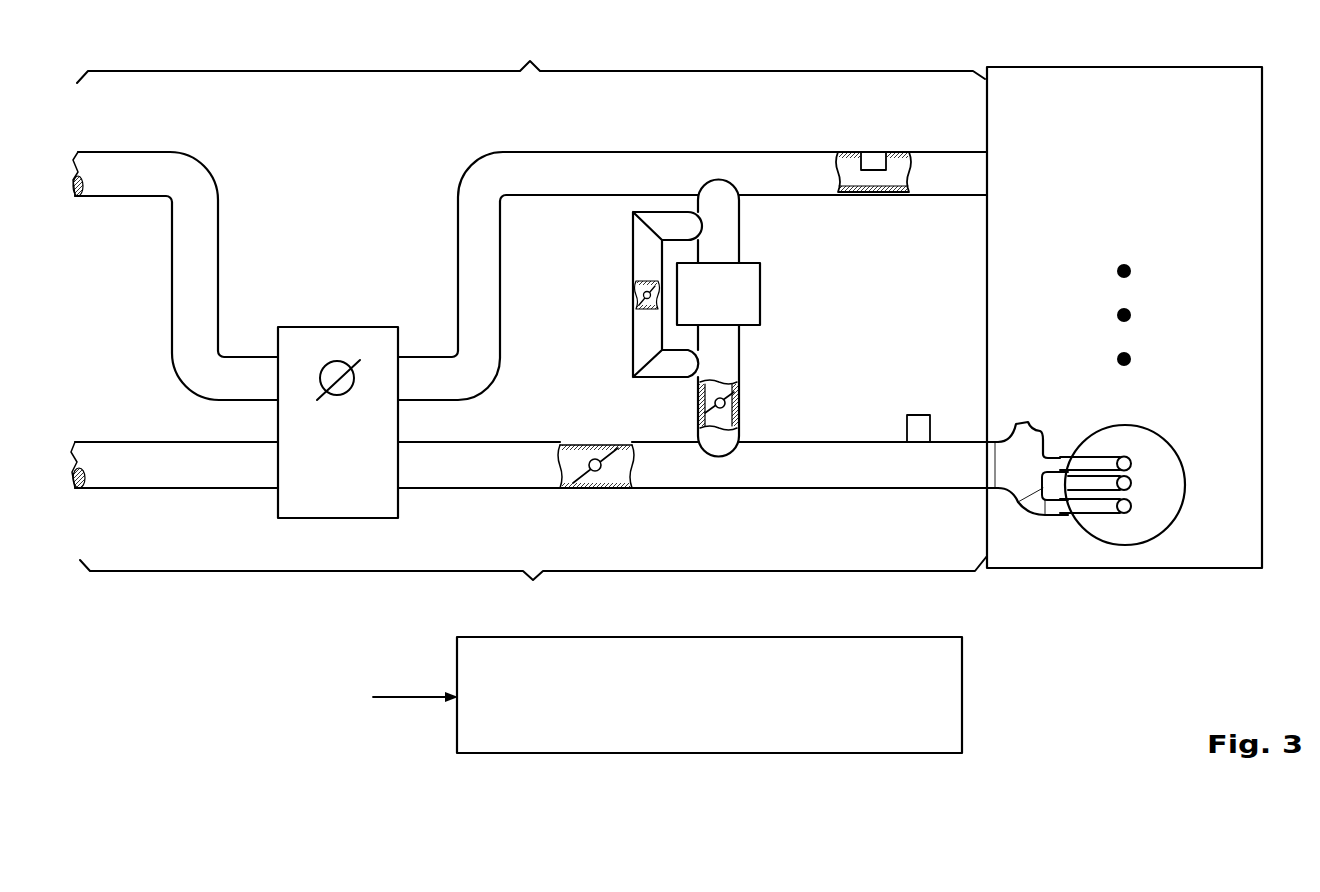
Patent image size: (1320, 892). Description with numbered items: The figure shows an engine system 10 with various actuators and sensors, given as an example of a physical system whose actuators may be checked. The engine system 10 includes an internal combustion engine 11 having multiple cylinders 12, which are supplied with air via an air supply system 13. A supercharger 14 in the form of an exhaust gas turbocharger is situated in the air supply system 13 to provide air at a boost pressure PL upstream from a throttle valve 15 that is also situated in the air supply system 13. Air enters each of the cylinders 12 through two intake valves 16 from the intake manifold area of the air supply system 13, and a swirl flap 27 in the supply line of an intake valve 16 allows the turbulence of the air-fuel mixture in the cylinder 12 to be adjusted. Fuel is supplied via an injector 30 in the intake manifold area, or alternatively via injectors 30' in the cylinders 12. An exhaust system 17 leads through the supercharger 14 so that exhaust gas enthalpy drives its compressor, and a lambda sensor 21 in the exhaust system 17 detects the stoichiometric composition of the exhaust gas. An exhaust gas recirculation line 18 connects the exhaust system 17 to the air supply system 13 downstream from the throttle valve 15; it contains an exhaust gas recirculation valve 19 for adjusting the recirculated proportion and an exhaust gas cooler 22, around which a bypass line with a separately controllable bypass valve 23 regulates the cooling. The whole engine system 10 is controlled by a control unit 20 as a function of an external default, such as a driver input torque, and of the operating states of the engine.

The engine system 10 is at (1235, 43).
The internal combustion engine 11 is at (1121, 66).
The cylinders 12 is at (1125, 545).
The air supply system 13 is at (533, 584).
The supercharger 14 is at (339, 326).
The throttle valve 15 is at (595, 445).
The intake valves 16 is at (1131, 463).
The exhaust system 17 is at (531, 58).
The exhaust gas recirculation line 18 is at (739, 355).
The exhaust gas recirculation valve 19 is at (727, 403).
The control unit 20 is at (962, 692).
The lambda sensor 21 is at (873, 153).
The exhaust gas cooler 22 is at (750, 296).
The bypass valve 23 is at (636, 295).
The swirl flap 27 is at (1050, 460).
The injector 30 is at (920, 405).
The injectors 30' is at (1150, 486).
The boost pressure PL is at (517, 460).